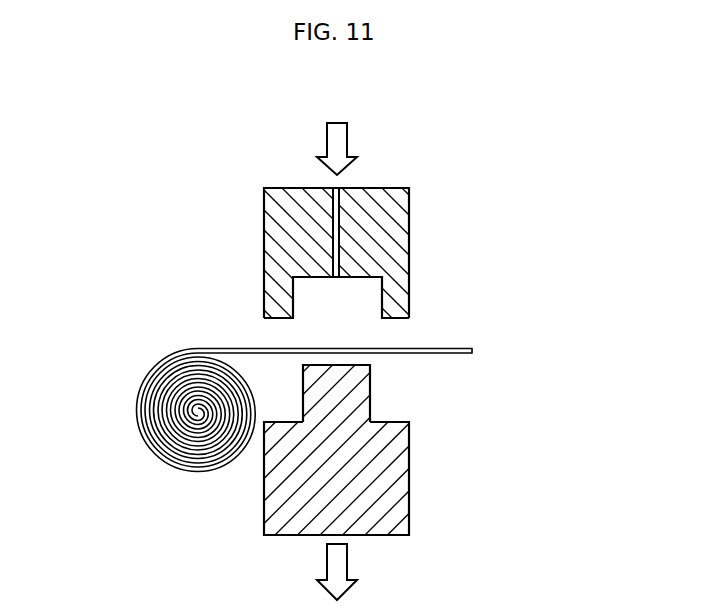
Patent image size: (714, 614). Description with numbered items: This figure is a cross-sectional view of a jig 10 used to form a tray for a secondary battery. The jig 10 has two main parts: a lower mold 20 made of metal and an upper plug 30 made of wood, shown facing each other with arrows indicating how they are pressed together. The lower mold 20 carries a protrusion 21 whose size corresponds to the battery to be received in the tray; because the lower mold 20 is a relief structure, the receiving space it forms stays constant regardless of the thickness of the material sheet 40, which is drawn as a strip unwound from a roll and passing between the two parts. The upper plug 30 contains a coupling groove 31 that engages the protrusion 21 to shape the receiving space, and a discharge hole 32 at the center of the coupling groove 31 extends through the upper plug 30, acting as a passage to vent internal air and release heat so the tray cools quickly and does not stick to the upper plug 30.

The jig 10 is at (146, 131).
The lower mold 20 is at (409, 481).
The protrusion 21 is at (370, 389).
The upper plug 30 is at (409, 240).
The coupling groove 31 is at (352, 277).
The discharge hole 32 is at (338, 188).
The material sheet 40 is at (472, 351).